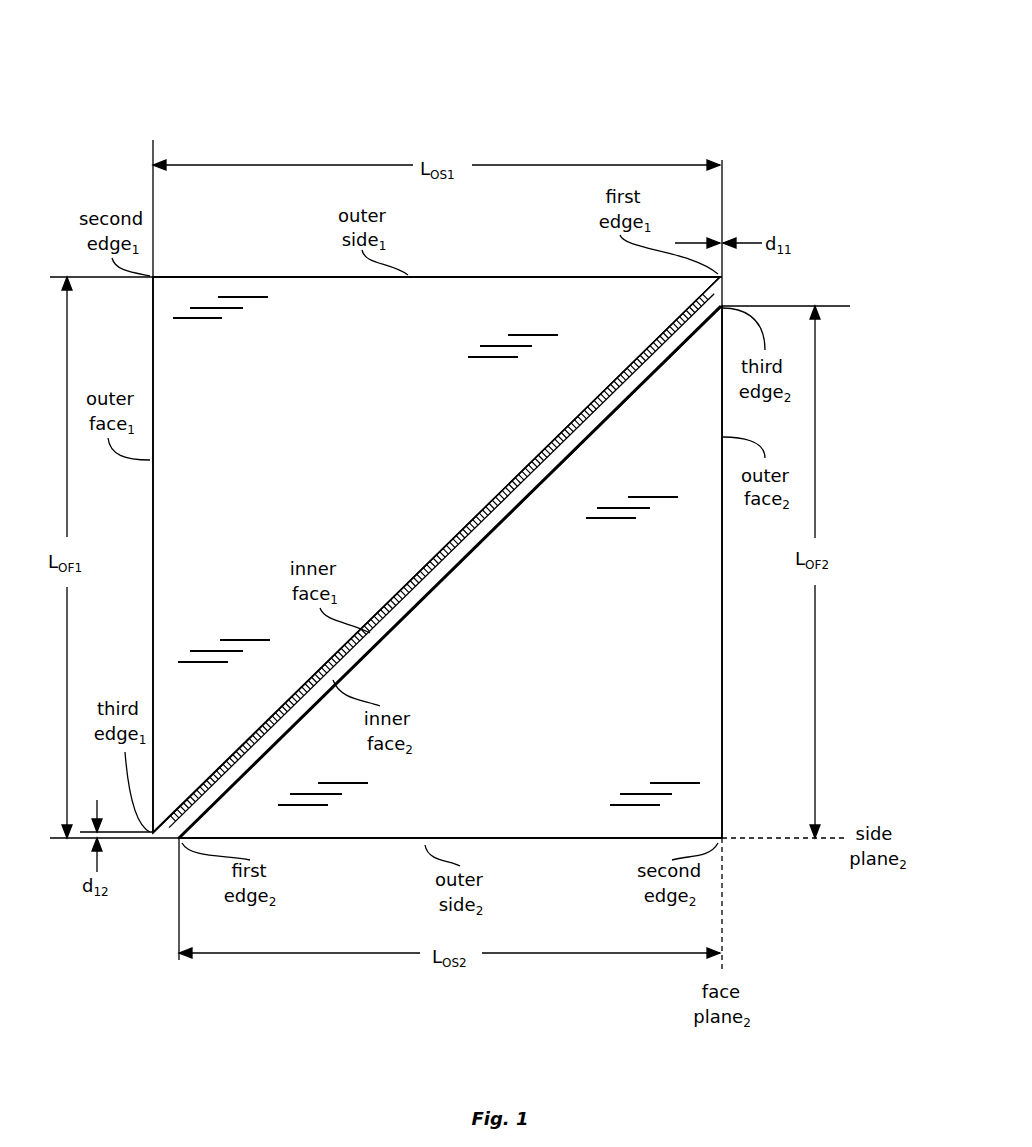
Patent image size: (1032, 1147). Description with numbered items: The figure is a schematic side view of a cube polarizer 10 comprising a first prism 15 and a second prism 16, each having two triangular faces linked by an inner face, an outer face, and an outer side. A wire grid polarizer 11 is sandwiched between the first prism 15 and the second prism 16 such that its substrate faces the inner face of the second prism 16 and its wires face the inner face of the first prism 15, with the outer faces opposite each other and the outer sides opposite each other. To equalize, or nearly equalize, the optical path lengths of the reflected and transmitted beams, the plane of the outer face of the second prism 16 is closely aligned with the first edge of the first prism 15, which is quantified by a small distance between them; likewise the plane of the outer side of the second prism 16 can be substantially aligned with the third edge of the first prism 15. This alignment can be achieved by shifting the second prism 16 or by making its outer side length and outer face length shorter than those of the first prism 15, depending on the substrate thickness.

The cube polarizer 10 is at (425, 70).
The wire grid polarizer 11 is at (455, 562).
The first prism 15 is at (436, 555).
The second prism 16 is at (450, 572).